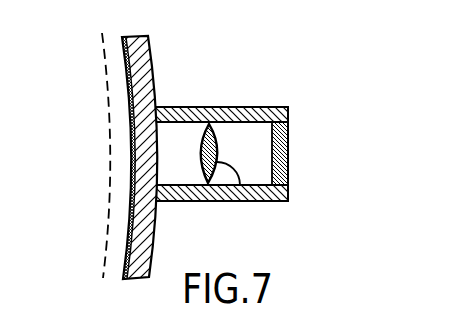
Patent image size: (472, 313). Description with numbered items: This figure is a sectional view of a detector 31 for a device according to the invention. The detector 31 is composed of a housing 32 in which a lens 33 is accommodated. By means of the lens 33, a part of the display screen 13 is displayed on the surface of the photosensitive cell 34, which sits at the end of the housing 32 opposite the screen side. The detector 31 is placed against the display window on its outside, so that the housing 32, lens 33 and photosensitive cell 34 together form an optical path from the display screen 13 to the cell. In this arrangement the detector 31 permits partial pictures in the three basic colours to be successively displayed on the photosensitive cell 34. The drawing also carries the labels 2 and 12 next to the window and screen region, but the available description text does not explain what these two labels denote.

The transparent plate 2 is at (147, 38).
The reference surface line 12 is at (109, 113).
The display screen 13 is at (122, 40).
The detector 31 is at (246, 136).
The housing 32 is at (208, 202).
The lens 33 is at (239, 187).
The photosensitive cell 34 is at (289, 167).